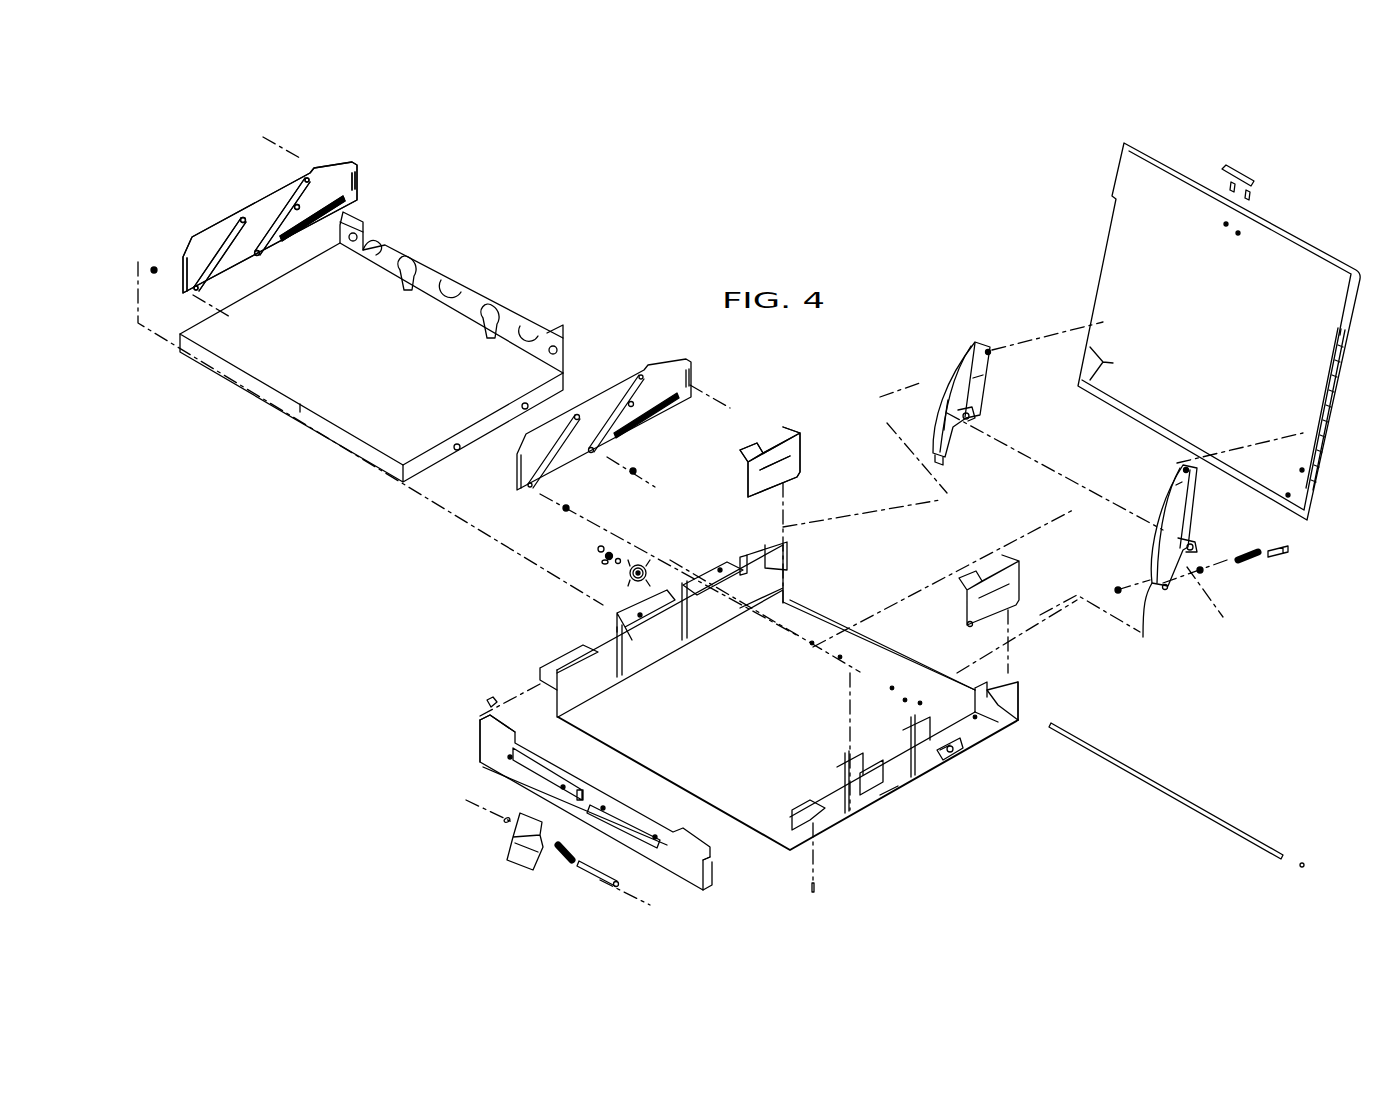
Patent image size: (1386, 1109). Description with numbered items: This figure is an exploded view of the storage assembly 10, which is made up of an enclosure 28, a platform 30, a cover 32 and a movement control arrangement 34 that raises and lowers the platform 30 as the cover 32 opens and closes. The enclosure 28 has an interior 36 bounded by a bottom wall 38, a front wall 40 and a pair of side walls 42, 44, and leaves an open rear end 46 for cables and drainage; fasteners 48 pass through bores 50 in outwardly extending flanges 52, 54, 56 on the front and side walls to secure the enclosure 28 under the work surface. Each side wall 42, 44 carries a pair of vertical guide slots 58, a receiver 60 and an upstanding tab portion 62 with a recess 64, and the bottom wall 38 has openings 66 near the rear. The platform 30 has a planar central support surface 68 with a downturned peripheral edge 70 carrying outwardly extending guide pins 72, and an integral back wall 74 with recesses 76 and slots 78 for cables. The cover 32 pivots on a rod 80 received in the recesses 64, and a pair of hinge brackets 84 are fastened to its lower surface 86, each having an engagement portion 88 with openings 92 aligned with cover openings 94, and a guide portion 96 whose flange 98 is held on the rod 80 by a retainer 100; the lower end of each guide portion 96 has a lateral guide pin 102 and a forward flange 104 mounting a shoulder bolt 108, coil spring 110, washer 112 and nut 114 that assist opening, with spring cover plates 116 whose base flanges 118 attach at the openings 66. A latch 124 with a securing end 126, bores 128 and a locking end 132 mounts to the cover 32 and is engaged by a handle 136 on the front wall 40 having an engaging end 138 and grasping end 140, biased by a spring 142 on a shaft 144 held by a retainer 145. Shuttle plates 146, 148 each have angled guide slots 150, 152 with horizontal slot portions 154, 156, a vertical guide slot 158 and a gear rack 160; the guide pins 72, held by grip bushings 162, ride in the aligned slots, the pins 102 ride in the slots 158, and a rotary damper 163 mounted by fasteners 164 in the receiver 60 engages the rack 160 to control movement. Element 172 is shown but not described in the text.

The storage assembly 10 is at (910, 236).
The enclosure 28 is at (1030, 706).
The platform 30 is at (488, 287).
The cover 32 is at (1360, 369).
The movement control arrangement 34 is at (376, 153).
The interior 36 is at (683, 755).
The bottom wall 38 is at (745, 820).
The front wall 40 is at (724, 888).
The side wall 42 is at (657, 650).
The side wall 44 is at (897, 782).
The open rear end 46 is at (900, 617).
The fasteners 48 is at (818, 888).
The bores 50 is at (548, 662).
The flange 52 is at (540, 768).
The flange 54 is at (718, 582).
The flange 56 is at (845, 816).
The guide slots 58 is at (690, 642).
The receiver 60 is at (952, 760).
The upstanding tab portion 62 is at (770, 545).
The recess 64 is at (745, 555).
The openings 66 is at (750, 622).
The central support surface 68 is at (358, 363).
The downturned peripheral edge 70 is at (302, 415).
The guide pins 72 is at (520, 404).
The back wall 74 is at (440, 280).
The recesses 76 is at (400, 292).
The slots 78 is at (364, 252).
The rod 80 is at (1200, 820).
The hinge brackets 84 is at (971, 342).
The lower surface 86 is at (1328, 278).
The engagement portion 88 is at (988, 349).
The openings 92 is at (978, 378).
The openings 94 is at (1112, 364).
The guide portion 96 is at (947, 420).
The flange 98 is at (972, 413).
The retainer 100 is at (1302, 863).
The guide pin 102 is at (1168, 588).
The flange 104 is at (943, 462).
The shoulder bolt 108 is at (1292, 548).
The coil spring 110 is at (1258, 560).
The washer 112 is at (1200, 574).
The nut 114 is at (1117, 587).
The spring cover plates 116 is at (780, 450).
The base flanges 118 is at (976, 630).
The latch 124 is at (1258, 173).
The securing end 126 is at (1237, 192).
The bores 128 is at (1252, 195).
The locking end 132 is at (1228, 168).
The handle 136 is at (508, 868).
The engaging end 138 is at (520, 810).
The grasping end 140 is at (515, 852).
The spring 142 is at (567, 872).
The shaft 144 is at (610, 870).
The retainer 145 is at (504, 823).
The shuttle plate 146 is at (272, 202).
The shuttle plate 148 is at (658, 370).
The angled guide slot 150 is at (215, 275).
The angled guide slot 152 is at (308, 170).
The horizontal slot portion 154 is at (187, 305).
The horizontal slot portion 156 is at (240, 210).
The vertical guide slot 158 is at (362, 179).
The gear rack 160 is at (350, 205).
The grip bushings 162 is at (154, 268).
The rotary damper 163 is at (641, 567).
The fasteners 164 is at (600, 549).
The fastener 172 is at (485, 700).